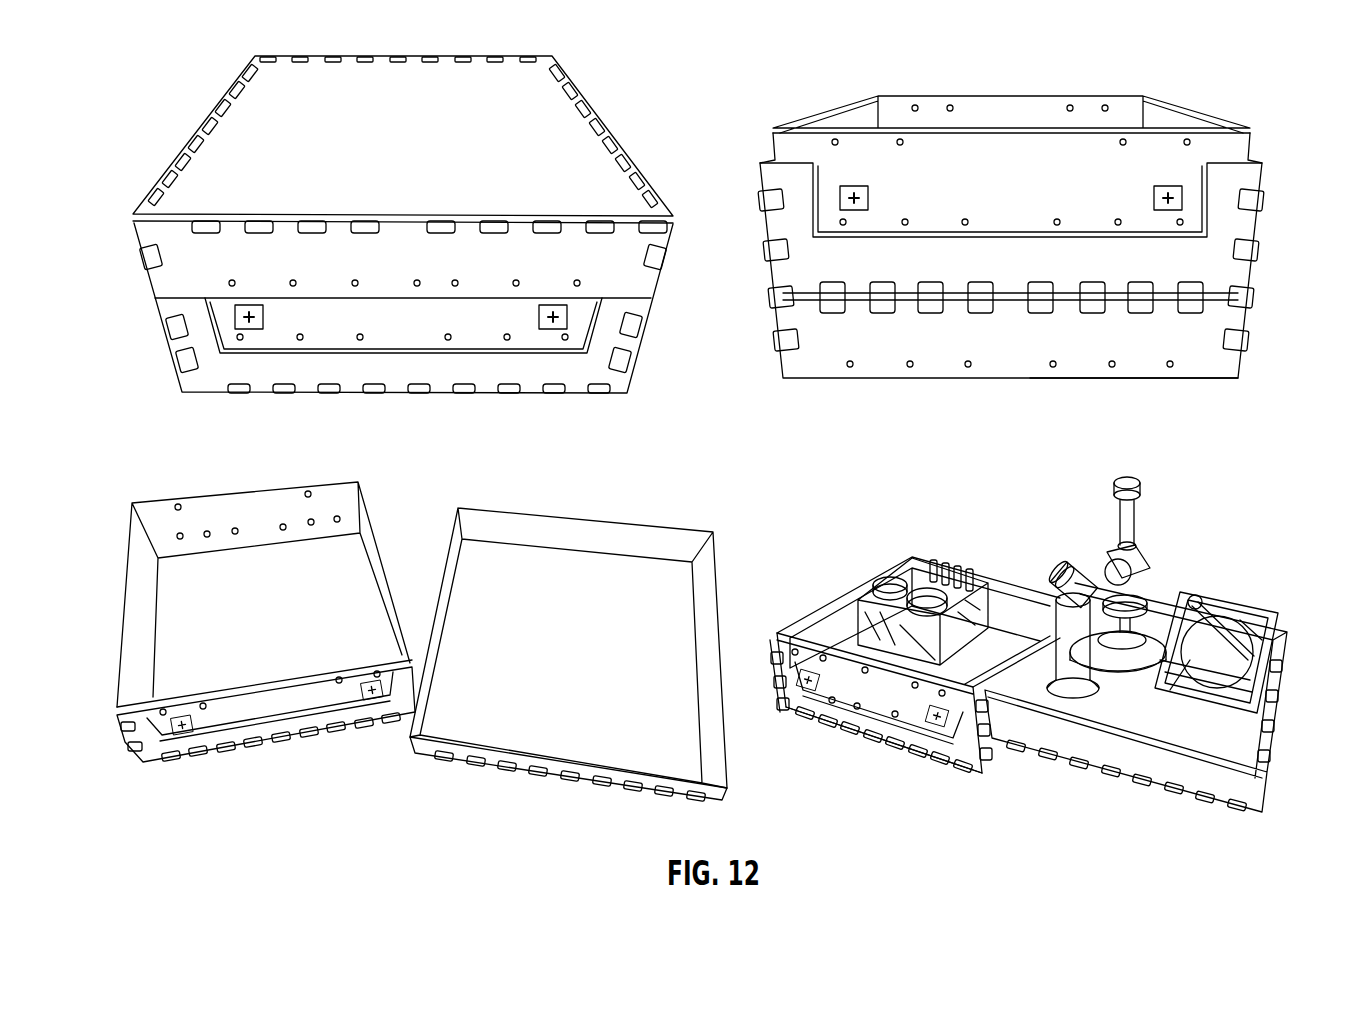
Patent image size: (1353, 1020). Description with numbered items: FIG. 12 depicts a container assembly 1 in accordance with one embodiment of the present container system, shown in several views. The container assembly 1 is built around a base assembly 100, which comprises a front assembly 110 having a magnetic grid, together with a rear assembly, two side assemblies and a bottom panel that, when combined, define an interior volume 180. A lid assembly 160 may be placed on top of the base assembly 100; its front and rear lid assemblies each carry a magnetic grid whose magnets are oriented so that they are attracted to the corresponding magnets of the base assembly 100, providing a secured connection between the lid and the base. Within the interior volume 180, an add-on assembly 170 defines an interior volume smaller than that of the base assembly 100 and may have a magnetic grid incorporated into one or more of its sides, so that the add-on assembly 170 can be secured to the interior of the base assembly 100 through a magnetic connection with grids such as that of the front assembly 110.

The box assembly 1 is at (117, 125).
The base assembly 100 is at (415, 382).
The front assembly 110 is at (1215, 361).
The lid assembly 160 is at (568, 98).
The add-on assembly 170 is at (912, 572).
The interior volume 180 is at (995, 645).